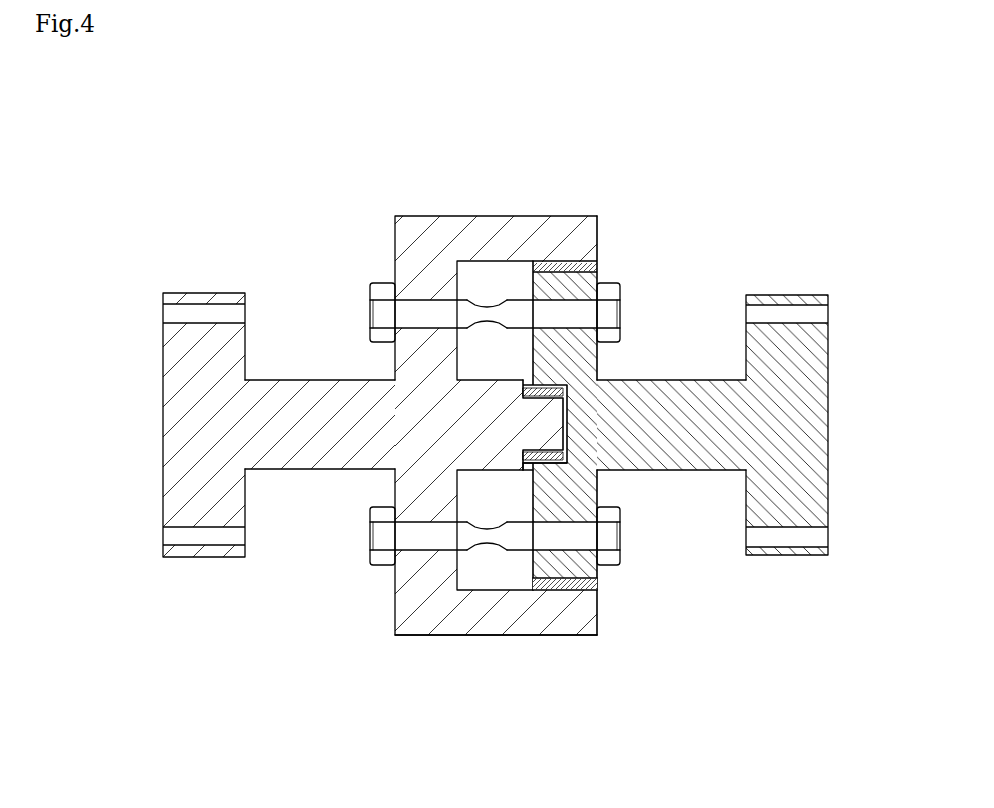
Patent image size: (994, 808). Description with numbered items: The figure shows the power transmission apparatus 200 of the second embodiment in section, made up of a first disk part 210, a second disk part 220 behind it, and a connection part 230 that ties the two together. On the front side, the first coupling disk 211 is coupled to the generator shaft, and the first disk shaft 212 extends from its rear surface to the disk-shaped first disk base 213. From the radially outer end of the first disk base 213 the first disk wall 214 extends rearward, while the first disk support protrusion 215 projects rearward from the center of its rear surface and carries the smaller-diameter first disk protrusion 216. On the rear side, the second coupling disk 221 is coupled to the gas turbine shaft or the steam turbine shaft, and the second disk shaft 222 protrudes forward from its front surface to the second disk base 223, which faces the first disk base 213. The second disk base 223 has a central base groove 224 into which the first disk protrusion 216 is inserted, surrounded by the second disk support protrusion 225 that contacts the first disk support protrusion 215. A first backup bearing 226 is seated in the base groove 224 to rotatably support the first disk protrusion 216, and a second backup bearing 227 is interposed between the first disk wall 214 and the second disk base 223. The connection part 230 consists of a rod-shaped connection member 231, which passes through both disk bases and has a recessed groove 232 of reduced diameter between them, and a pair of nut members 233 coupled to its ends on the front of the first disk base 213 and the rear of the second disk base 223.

The power transmission apparatus 200 is at (128, 136).
The first disk part 210 is at (196, 578).
The first coupling disk 211 is at (183, 488).
The first disk shaft 212 is at (300, 452).
The first disk base 213 is at (443, 474).
The first disk wall 214 is at (497, 618).
The first disk support protrusion 215 is at (462, 522).
The first disk protrusion 216 is at (550, 410).
The second disk part 220 is at (801, 577).
The second coupling disk 221 is at (808, 483).
The second disk shaft 222 is at (722, 445).
The second disk base 223 is at (619, 437).
The base groove 224 is at (548, 454).
The second disk support protrusion 225 is at (528, 472).
The first backup bearing 226 is at (548, 460).
The second backup bearing 227 is at (580, 578).
The connection part 230 is at (358, 263).
The connection member 231 is at (465, 300).
The recessed groove 232 is at (490, 306).
The nut member 233 is at (385, 320).